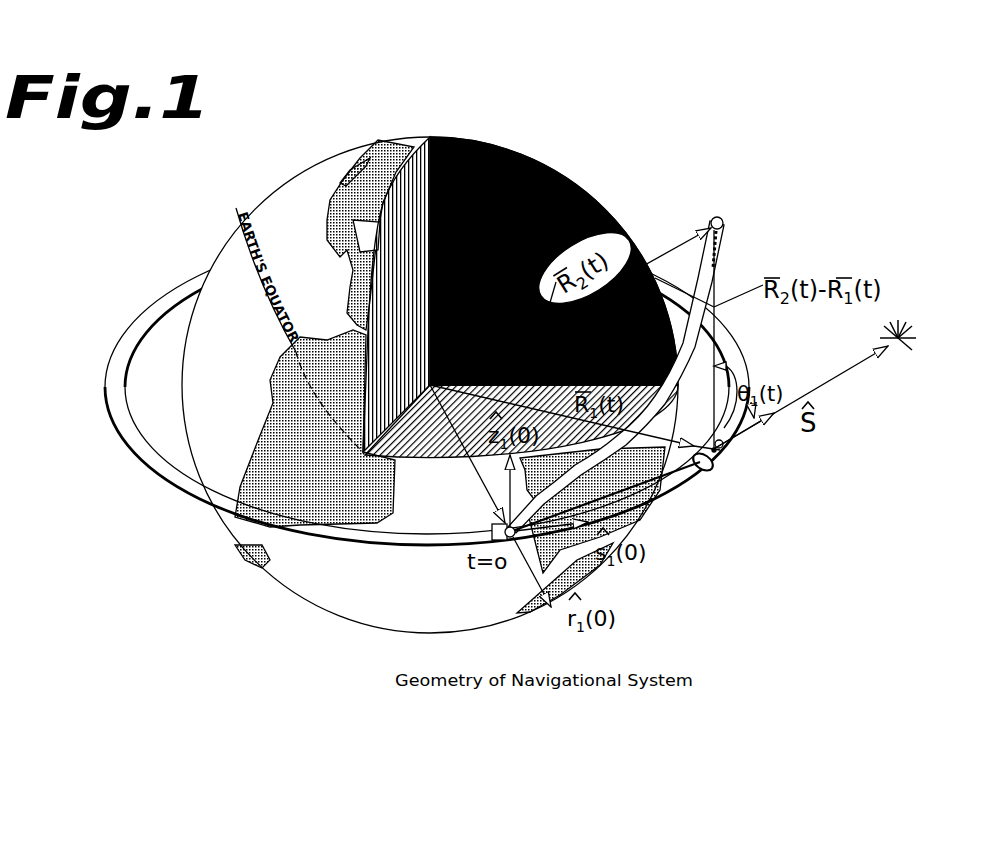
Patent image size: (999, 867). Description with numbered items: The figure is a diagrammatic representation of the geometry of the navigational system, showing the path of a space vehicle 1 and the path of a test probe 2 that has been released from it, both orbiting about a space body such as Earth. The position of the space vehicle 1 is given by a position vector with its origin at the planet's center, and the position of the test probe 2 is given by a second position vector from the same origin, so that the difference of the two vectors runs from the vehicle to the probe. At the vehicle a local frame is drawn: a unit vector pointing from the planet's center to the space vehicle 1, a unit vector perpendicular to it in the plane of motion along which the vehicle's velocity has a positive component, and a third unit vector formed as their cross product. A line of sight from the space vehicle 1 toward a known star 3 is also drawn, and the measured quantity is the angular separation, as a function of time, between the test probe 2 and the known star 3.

The space vehicle 1 is at (780, 468).
The test probe 2 is at (716, 214).
The known star 3 is at (918, 371).